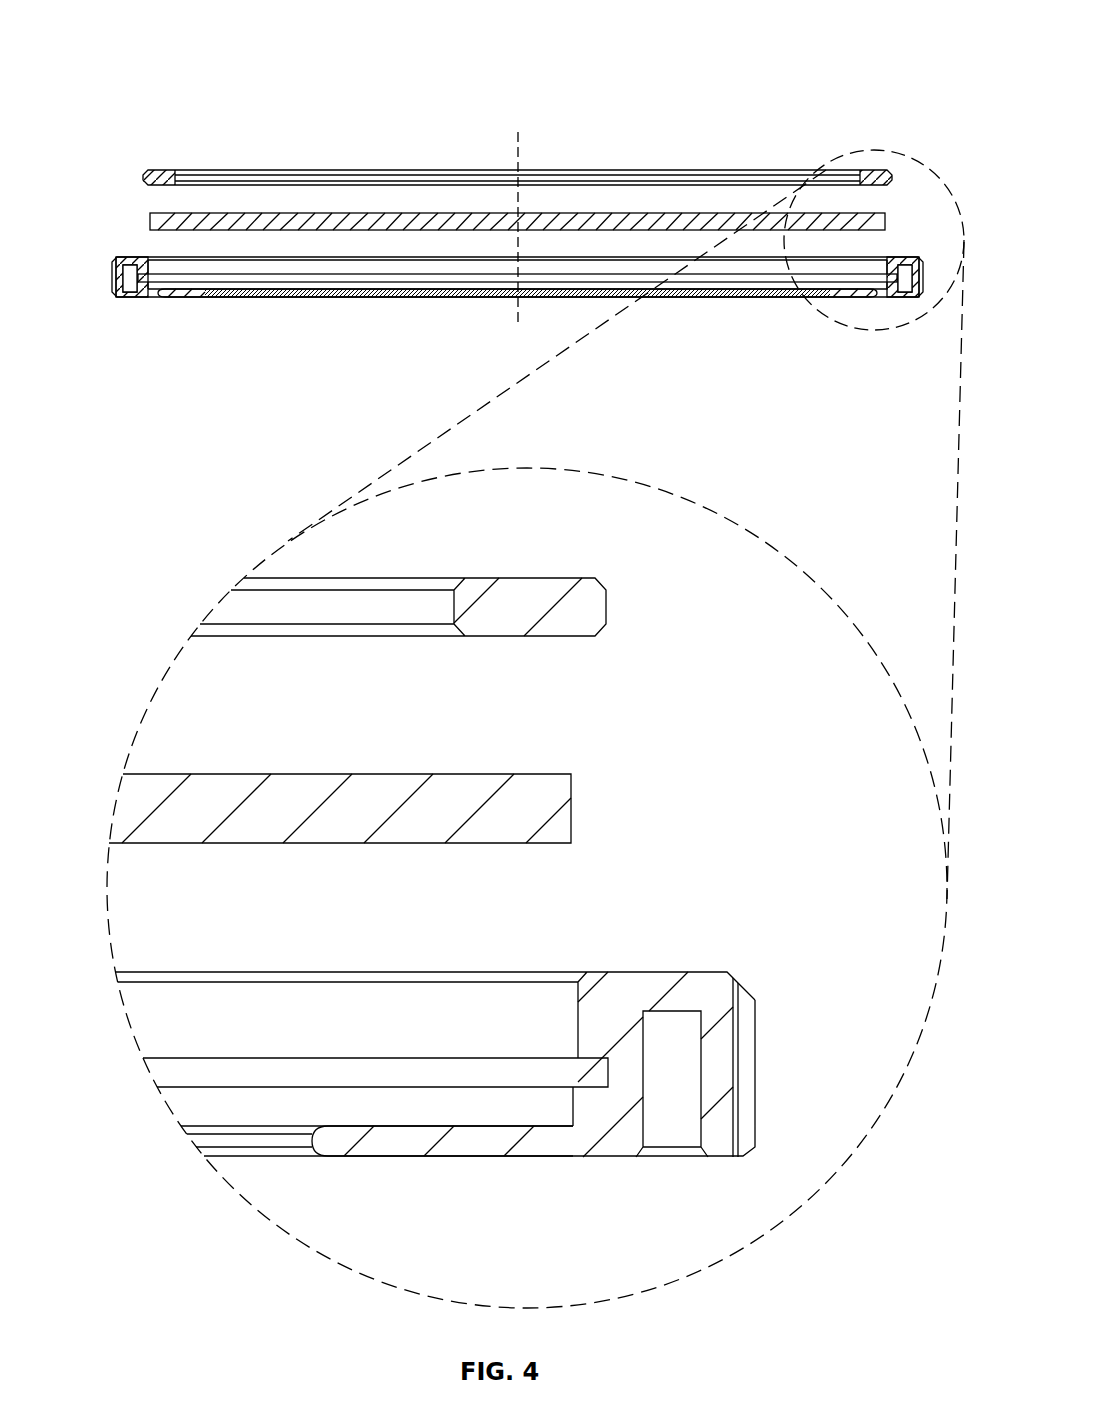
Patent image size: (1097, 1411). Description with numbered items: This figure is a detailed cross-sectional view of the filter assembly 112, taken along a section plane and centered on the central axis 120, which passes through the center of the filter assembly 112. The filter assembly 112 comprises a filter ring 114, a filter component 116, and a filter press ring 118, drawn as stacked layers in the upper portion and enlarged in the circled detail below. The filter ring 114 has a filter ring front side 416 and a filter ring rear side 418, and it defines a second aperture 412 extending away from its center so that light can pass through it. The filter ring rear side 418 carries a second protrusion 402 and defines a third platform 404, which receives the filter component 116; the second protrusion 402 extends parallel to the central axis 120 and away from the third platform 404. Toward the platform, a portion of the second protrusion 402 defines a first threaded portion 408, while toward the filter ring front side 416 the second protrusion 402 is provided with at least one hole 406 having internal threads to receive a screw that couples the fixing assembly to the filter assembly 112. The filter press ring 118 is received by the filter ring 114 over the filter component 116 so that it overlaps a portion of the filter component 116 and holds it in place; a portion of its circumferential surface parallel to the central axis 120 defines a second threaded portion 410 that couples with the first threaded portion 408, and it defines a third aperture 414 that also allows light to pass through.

The filter assembly 112 is at (152, 68).
The filter ring 114 is at (510, 325).
The filter component 116 is at (140, 205).
The filter press ring 118 is at (517, 135).
The central axis 120 is at (522, 142).
The second protrusion 402 is at (712, 1023).
The third platform 404 is at (393, 1125).
The hole 406 is at (688, 1090).
The first threaded portion 408 is at (533, 985).
The second threaded portion 410 is at (608, 612).
The second aperture 412 is at (290, 287).
The third aperture 414 is at (430, 172).
The filter ring front side 416 is at (530, 1192).
The filter ring rear side 418 is at (480, 1064).